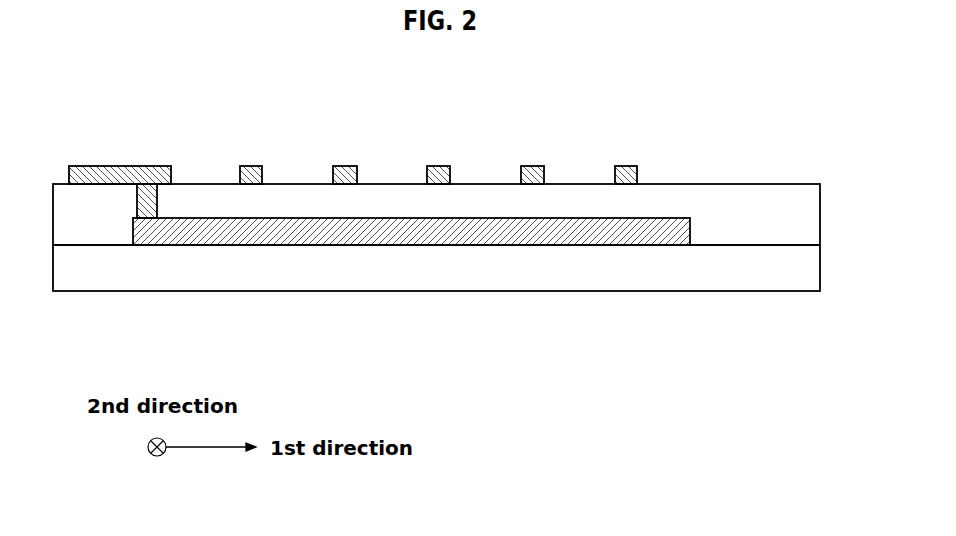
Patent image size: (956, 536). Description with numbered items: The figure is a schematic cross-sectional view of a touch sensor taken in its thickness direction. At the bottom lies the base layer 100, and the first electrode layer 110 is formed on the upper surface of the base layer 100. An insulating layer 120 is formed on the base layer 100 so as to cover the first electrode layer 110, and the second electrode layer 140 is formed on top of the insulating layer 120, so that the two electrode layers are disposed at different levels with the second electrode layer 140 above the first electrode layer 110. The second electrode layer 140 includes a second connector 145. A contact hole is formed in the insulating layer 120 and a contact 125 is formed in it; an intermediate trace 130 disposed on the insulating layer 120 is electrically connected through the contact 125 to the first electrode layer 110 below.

The base layer 100 is at (567, 282).
The first electrode layer 110 is at (412, 245).
The insulating layer 120 is at (752, 184).
The contact 125 is at (158, 200).
The intermediate trace 130 is at (123, 166).
The second electrode layer 140 is at (438, 143).
The second connector 145 is at (441, 166).